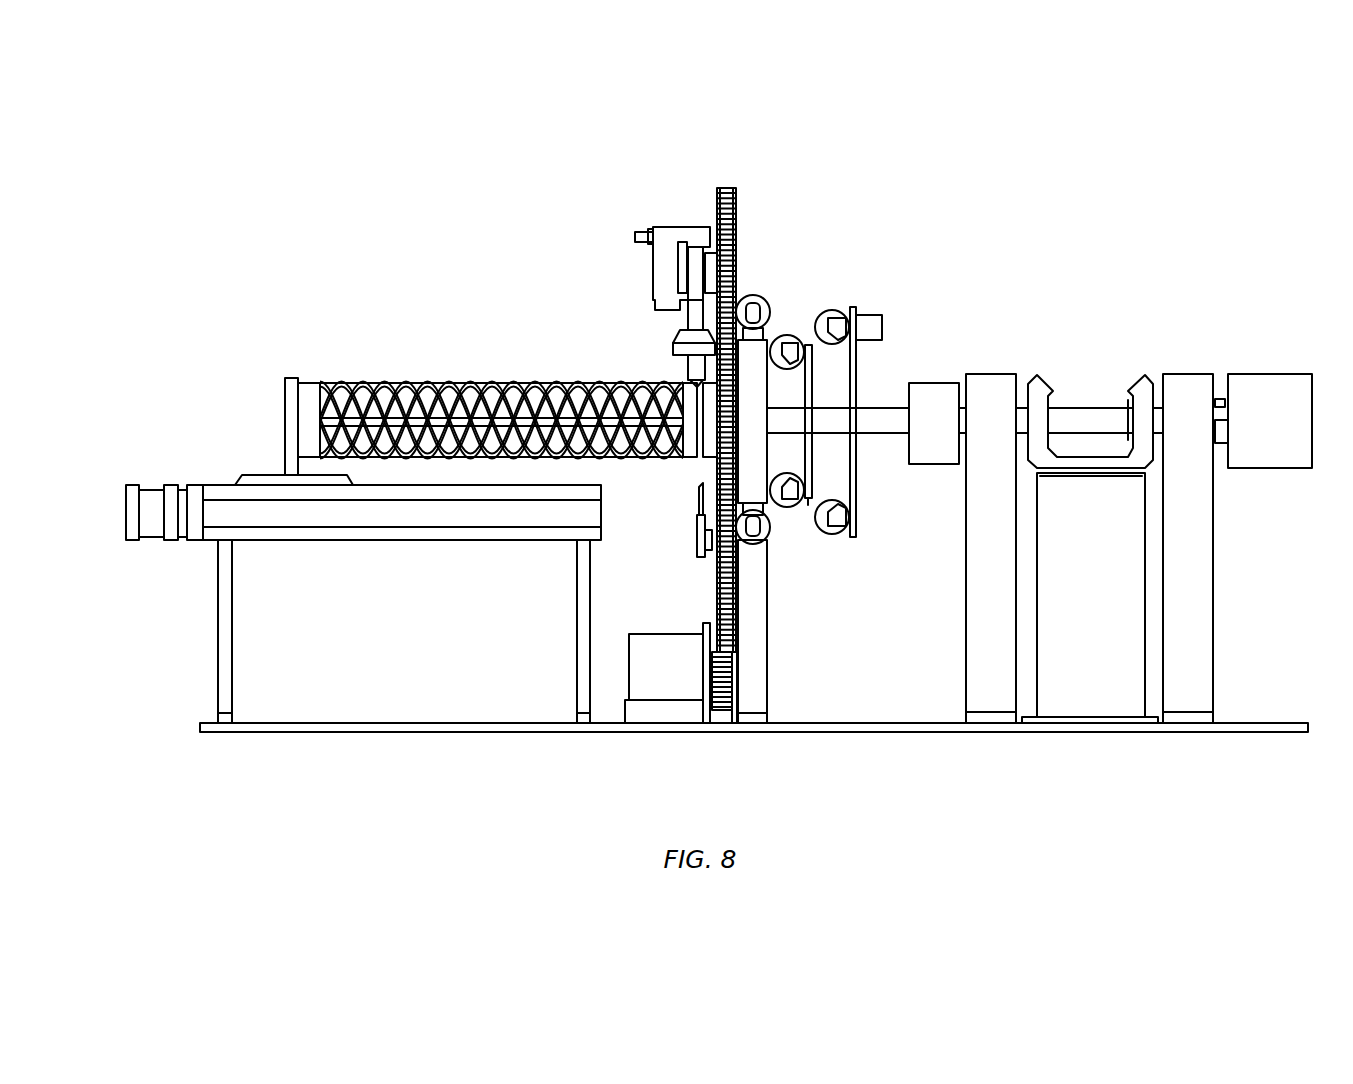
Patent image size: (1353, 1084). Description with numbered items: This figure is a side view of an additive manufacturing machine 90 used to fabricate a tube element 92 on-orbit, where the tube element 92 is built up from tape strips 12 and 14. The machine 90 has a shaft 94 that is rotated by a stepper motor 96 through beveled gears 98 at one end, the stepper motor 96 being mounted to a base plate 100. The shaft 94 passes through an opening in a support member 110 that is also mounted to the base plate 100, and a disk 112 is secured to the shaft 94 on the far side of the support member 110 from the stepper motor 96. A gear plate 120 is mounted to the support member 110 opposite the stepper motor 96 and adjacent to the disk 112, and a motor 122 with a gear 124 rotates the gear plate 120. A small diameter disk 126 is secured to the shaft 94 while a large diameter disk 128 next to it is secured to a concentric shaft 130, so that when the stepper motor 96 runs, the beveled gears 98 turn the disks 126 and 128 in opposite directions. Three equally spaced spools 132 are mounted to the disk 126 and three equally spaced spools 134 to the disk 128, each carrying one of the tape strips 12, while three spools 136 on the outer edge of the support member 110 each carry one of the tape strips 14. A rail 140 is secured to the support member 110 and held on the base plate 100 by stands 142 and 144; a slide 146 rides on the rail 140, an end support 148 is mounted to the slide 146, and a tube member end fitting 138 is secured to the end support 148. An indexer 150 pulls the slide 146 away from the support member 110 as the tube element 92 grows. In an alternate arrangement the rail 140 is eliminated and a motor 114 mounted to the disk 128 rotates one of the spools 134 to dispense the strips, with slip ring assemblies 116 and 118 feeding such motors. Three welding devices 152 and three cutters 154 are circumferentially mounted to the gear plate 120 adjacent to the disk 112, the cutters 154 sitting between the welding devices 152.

The tape strips 12 is at (524, 342).
The tape strips 14 is at (475, 387).
The additive manufacturing machine 90 is at (997, 211).
The tube element 92 is at (562, 370).
The shaft 94 is at (788, 418).
The stepper motor 96 is at (1108, 658).
The beveled gears 98 is at (1091, 372).
The base plate 100 is at (1100, 724).
The support member 110 is at (752, 668).
The disk 112 is at (690, 387).
The motor 114 is at (872, 315).
The slip ring assembly 116 is at (935, 383).
The slip ring assembly 118 is at (1268, 385).
The gear plate 120 is at (727, 190).
The motor 122 is at (670, 702).
The gear 124 is at (722, 712).
The small diameter disk 126 is at (800, 510).
The large diameter disk 128 is at (852, 537).
The concentric shaft 130 is at (885, 433).
The spools 132 is at (790, 335).
The spools 134 is at (833, 310).
The spools 136 is at (758, 295).
The tube member end fitting 138 is at (312, 385).
The rail 140 is at (470, 515).
The stand 142 is at (225, 648).
The stand 144 is at (580, 645).
The slide 146 is at (298, 478).
The end support 148 is at (293, 423).
The indexer 150 is at (147, 510).
The welding devices 152 is at (693, 238).
The cutters 154 is at (697, 548).